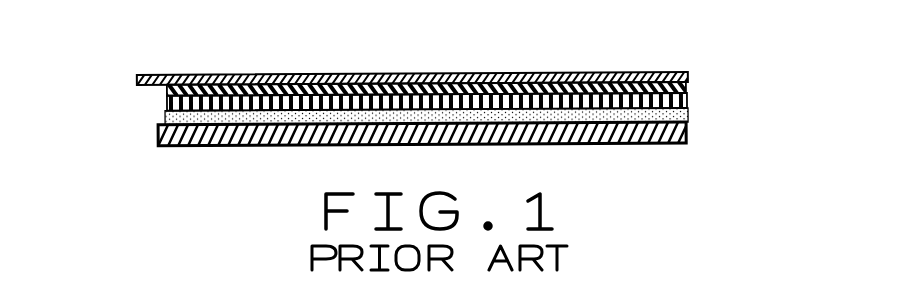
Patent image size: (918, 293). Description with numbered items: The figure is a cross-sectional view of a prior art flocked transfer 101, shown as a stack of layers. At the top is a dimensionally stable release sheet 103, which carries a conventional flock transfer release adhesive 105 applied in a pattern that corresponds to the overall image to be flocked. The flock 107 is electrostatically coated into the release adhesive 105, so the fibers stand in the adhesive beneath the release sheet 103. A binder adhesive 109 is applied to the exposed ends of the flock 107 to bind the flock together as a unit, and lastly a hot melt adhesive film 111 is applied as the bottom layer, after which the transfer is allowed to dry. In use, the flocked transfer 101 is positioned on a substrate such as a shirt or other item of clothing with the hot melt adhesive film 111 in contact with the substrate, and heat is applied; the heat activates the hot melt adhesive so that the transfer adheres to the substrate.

The prior art flocked transfer 101 is at (178, 161).
The dimensionally stable release sheet 103 is at (140, 79).
The flock transfer release adhesive 105 is at (167, 92).
The flock 107 is at (688, 103).
The binder adhesive 109 is at (688, 117).
The hot melt adhesive film 111 is at (687, 135).